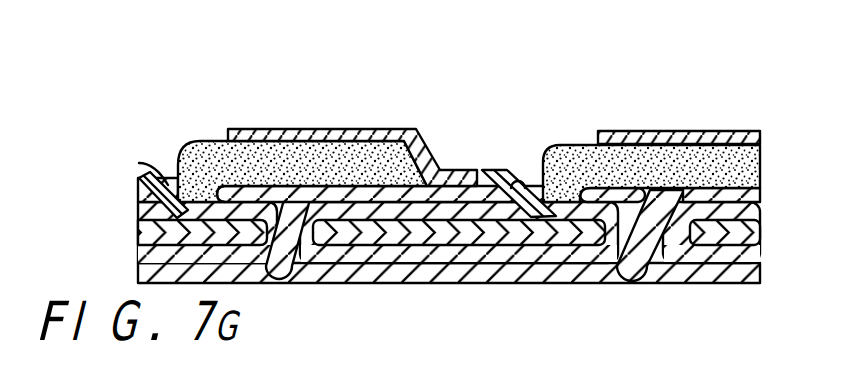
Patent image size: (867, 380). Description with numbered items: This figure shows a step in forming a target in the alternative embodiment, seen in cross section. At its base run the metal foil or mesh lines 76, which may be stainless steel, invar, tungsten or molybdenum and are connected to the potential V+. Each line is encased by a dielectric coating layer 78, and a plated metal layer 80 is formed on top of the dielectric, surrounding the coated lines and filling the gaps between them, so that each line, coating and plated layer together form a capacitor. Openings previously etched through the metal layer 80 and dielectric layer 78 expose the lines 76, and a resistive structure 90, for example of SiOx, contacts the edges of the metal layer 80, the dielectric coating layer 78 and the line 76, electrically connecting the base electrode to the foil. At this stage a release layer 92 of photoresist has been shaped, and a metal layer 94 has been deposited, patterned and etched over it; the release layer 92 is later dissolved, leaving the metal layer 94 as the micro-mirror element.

The metal foil lines 76 is at (492, 220).
The dielectric coating layer 78 is at (380, 214).
The plated metal layer 80 is at (378, 188).
The resistive structure 90 is at (538, 186).
The release layer 92 is at (211, 160).
The metal layer (micro-mirror element) 94 is at (342, 128).